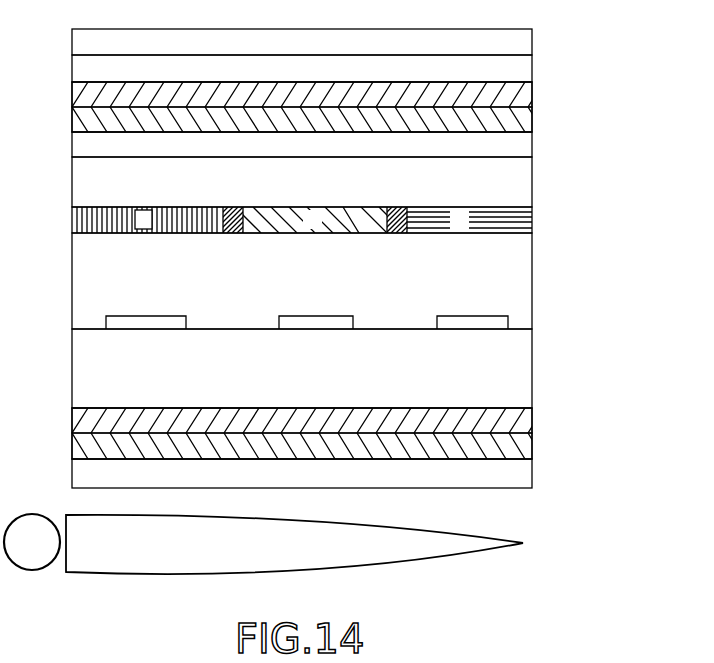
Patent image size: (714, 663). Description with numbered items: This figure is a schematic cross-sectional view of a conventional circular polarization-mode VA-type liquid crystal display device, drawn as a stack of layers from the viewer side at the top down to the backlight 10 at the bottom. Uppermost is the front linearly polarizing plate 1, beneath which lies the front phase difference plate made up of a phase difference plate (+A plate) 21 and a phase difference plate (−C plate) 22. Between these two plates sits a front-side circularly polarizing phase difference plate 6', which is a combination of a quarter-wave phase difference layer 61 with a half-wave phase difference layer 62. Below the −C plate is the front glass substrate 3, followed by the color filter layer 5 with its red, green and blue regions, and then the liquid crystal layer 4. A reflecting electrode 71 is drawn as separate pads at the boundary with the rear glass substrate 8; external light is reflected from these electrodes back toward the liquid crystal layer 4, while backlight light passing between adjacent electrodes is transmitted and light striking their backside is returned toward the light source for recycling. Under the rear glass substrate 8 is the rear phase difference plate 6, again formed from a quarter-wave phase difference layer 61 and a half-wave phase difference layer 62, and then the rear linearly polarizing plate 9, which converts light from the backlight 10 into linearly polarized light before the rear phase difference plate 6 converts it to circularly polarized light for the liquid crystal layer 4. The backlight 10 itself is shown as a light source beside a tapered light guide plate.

The front linearly polarizing plate 1 is at (532, 42).
The phase difference plate (+A plate) 21 is at (532, 70).
The quarter-wave phase difference layer 61 is at (532, 97).
The half-wave phase difference layer 62 is at (532, 123).
The front-side circularly polarizing phase difference plate 6' is at (364, 111).
The phase difference plate (−C plate) 22 is at (532, 152).
The front glass substrate 3 is at (532, 184).
The color filter layer 5 is at (532, 216).
The liquid crystal layer 4 is at (532, 277).
The reflecting electrode 71 is at (508, 320).
The rear glass substrate 8 is at (532, 372).
The rear phase difference plate 6 is at (361, 435).
The rear linearly polarizing plate 9 is at (532, 472).
The backlight 10 is at (523, 543).